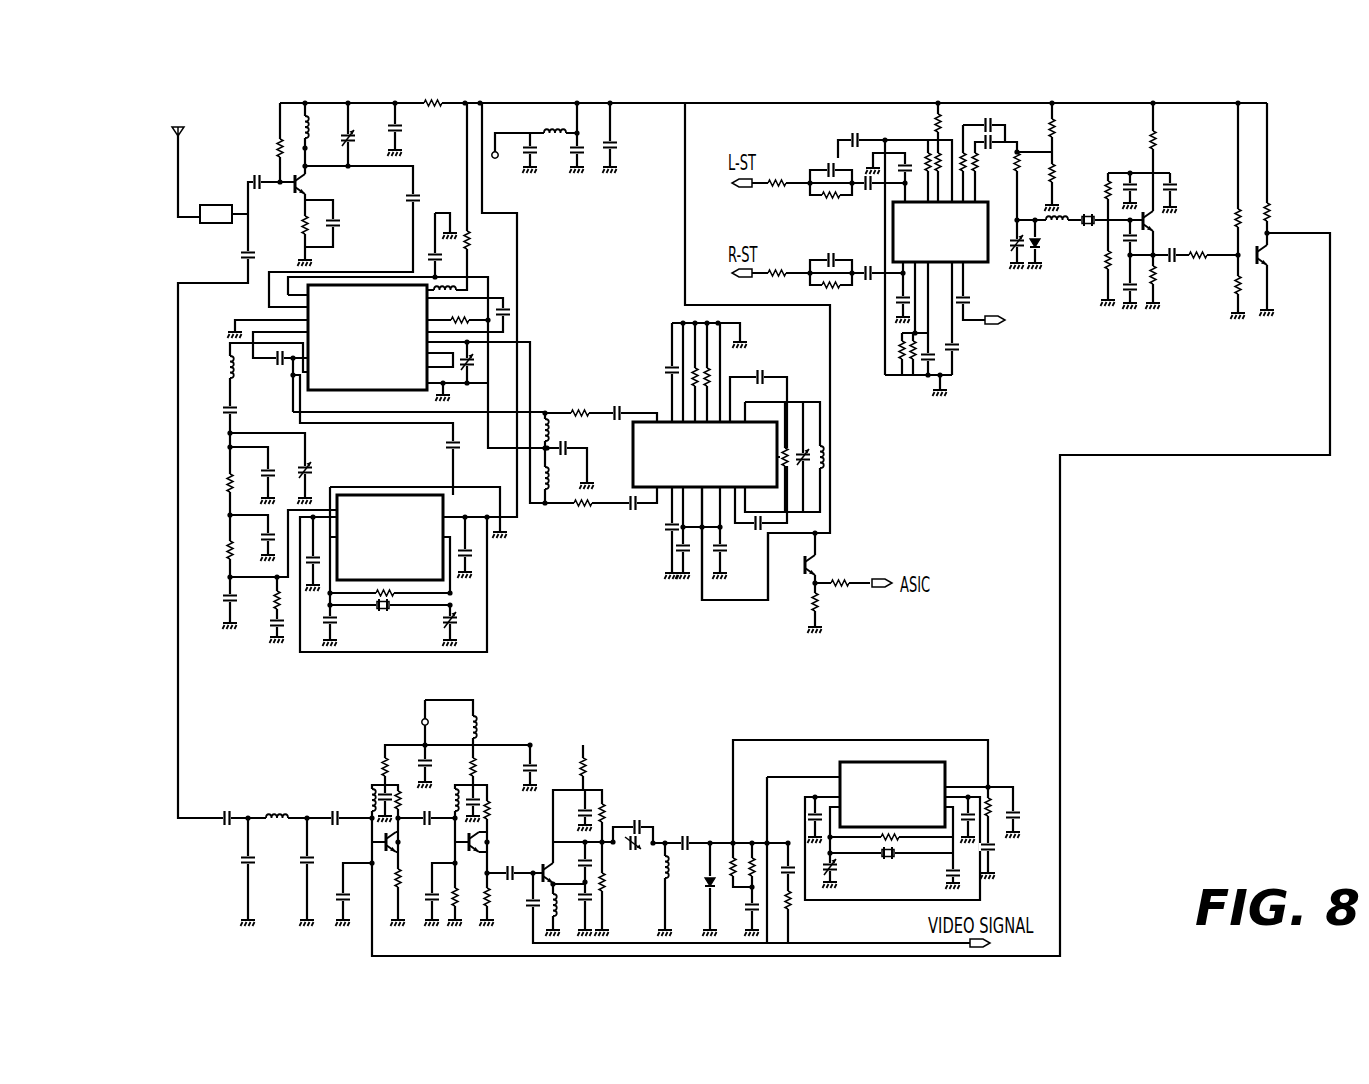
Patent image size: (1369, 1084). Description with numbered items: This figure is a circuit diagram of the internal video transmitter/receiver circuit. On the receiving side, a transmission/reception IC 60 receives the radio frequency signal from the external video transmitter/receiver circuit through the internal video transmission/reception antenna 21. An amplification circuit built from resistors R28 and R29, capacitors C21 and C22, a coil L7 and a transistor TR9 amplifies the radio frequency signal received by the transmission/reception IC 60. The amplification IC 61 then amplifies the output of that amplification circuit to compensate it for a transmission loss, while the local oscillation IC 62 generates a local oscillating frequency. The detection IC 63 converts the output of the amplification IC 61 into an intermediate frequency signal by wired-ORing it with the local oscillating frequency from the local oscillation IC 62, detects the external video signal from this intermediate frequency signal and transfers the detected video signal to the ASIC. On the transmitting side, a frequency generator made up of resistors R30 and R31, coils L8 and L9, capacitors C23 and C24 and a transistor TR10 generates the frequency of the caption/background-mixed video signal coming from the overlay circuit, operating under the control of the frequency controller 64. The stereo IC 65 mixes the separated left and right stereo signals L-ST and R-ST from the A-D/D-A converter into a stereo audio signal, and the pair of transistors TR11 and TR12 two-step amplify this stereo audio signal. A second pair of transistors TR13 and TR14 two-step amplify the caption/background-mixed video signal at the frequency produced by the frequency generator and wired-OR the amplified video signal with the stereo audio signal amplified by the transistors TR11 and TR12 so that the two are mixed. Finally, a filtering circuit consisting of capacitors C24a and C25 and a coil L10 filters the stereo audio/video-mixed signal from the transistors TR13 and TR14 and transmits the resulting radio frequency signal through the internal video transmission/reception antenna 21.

The internal video transmission/reception antenna 21 is at (161, 130).
The transmission/reception IC 60 is at (190, 237).
The amplification IC 61 is at (351, 285).
The local oscillation IC 62 is at (377, 494).
The detection IC 63 is at (633, 465).
The frequency controller 64 is at (877, 762).
The stereo IC 65 is at (982, 264).
The resistor R28 is at (263, 150).
The resistor R29 is at (291, 230).
The coil L7 is at (317, 128).
The transistor TR9 is at (316, 187).
The capacitor C21 is at (267, 195).
The capacitor C22 is at (350, 223).
The transistor TR11 is at (1169, 226).
The transistor TR12 is at (1283, 258).
The transistor TR10 is at (532, 863).
The transistor TR13 is at (446, 846).
The transistor TR14 is at (363, 846).
The coil L10 is at (275, 804).
The capacitor C25 is at (232, 858).
The capacitor C24a is at (291, 848).
The resistor R30 is at (615, 809).
The resistor R31 is at (604, 886).
The capacitor C23 is at (645, 832).
The capacitor C24 is at (638, 859).
The coil L9 is at (564, 906).
The coil L8 is at (676, 869).